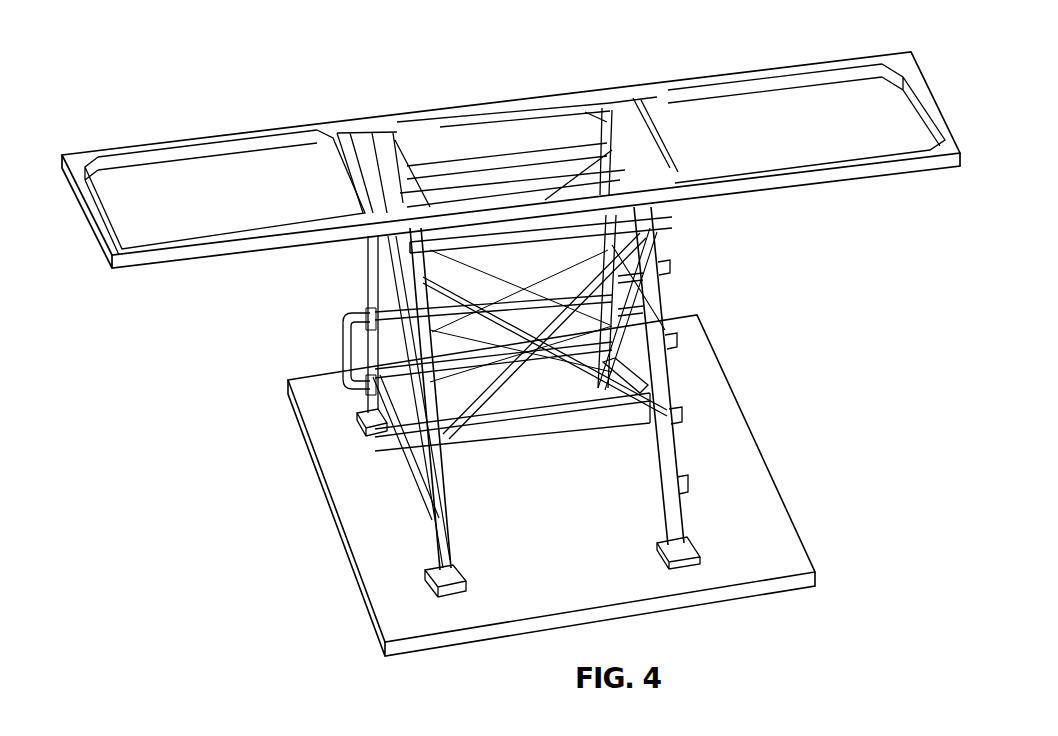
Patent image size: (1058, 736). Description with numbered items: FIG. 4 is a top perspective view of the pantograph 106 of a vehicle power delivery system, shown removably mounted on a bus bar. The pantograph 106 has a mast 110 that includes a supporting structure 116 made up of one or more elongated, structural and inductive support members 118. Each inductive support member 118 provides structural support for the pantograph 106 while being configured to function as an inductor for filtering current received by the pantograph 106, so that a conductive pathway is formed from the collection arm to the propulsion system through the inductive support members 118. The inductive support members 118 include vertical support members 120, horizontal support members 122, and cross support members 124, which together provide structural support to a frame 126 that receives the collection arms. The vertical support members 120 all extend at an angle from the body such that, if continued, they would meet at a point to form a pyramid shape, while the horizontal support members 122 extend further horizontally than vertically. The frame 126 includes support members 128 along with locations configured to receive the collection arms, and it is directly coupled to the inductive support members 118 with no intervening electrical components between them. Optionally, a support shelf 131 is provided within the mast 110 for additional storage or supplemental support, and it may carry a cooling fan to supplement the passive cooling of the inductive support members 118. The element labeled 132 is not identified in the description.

The pantograph 106 is at (662, 32).
The mast 110 is at (708, 318).
The supporting structure 116 is at (683, 288).
The inductive support member 118 is at (682, 443).
The vertical support member 120 is at (682, 527).
The horizontal support member 122 is at (407, 472).
The cross support member 124 is at (533, 283).
The frame 126 is at (532, 100).
The support member 128 is at (398, 172).
The support shelf 131 is at (522, 443).
The base plate 132 is at (760, 555).